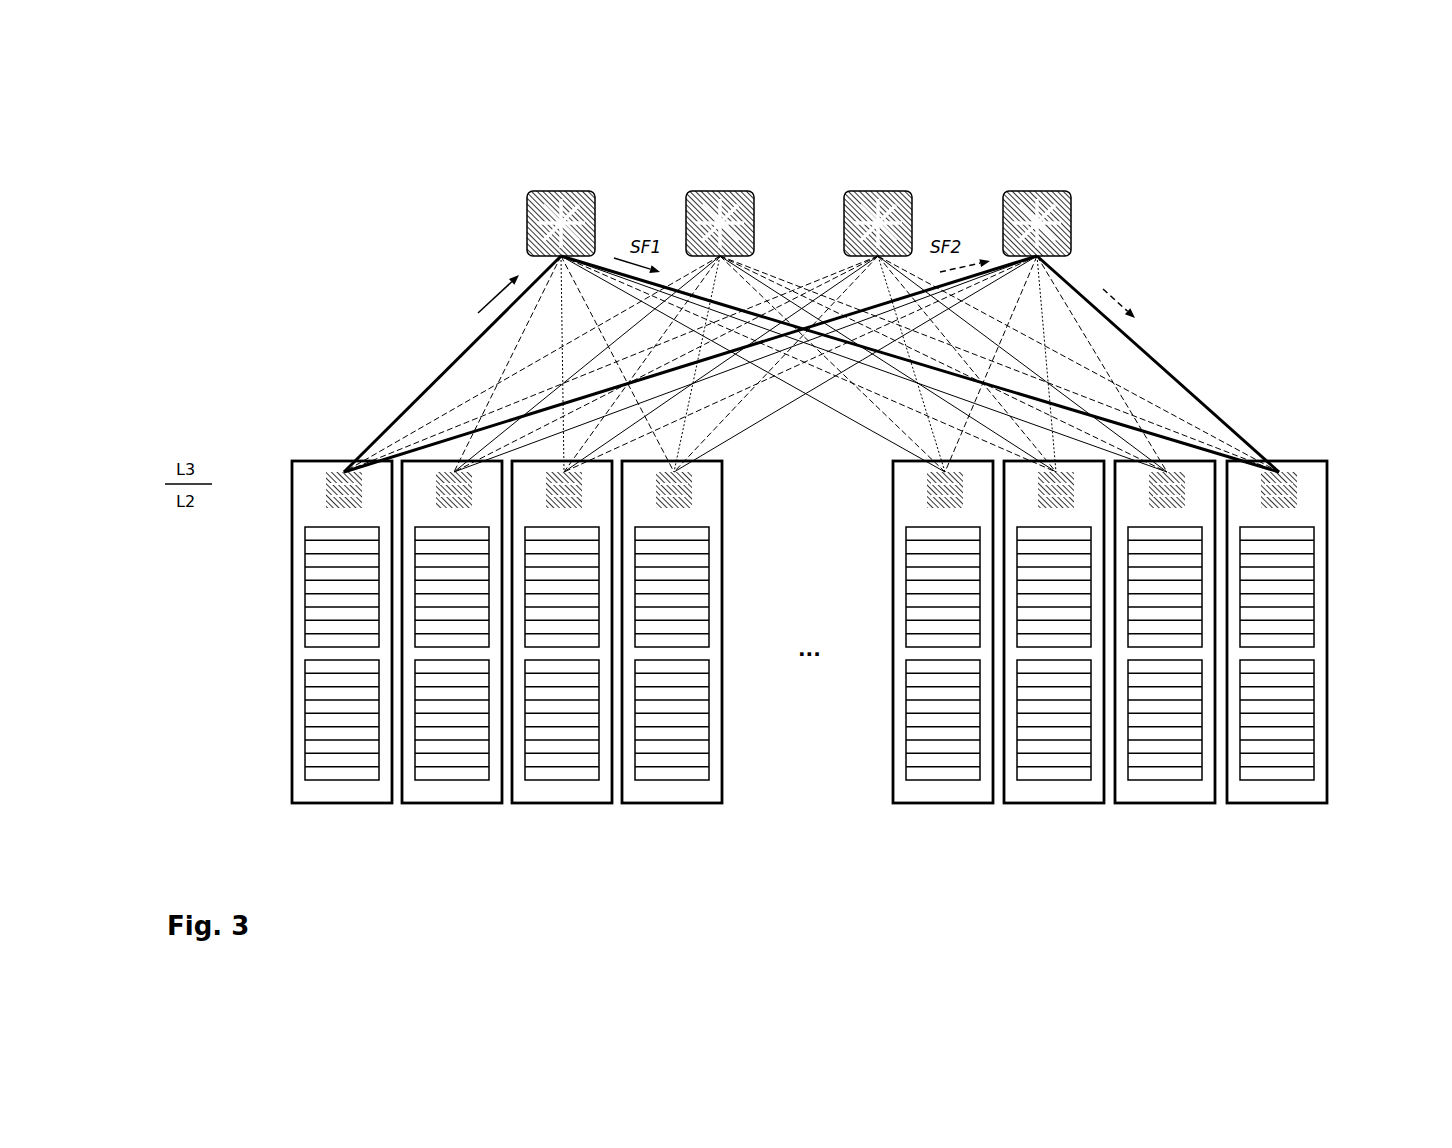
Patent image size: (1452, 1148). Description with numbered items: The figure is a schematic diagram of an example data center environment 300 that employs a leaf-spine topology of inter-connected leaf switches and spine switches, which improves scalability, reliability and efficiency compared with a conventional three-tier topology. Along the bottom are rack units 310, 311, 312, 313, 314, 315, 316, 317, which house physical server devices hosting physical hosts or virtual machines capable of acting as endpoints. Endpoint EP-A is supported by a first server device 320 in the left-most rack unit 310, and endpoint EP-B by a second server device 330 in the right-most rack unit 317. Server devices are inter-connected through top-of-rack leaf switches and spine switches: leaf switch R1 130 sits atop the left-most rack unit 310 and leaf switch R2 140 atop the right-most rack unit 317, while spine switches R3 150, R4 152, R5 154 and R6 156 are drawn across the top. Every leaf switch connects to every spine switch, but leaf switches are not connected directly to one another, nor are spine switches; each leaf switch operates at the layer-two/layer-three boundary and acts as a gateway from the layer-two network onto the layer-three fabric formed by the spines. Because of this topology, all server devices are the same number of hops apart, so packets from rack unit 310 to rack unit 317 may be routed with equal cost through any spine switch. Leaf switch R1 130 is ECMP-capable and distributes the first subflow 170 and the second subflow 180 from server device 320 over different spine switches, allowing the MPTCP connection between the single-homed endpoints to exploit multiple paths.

The data center environment 300 is at (219, 116).
The leaf switch R1 130 is at (326, 484).
The leaf switch R2 140 is at (1298, 490).
The spine switch R3 150 is at (560, 190).
The spine switch R4 152 is at (719, 190).
The spine switch R5 154 is at (877, 190).
The spine switch R6 156 is at (1036, 190).
The first subflow 170 is at (444, 292).
The second subflow 180 is at (1161, 294).
The rack unit 310 is at (300, 651).
The rack unit 311 is at (453, 806).
The rack unit 312 is at (563, 806).
The rack unit 313 is at (673, 806).
The rack unit 314 is at (944, 806).
The rack unit 315 is at (1055, 806).
The rack unit 316 is at (1166, 806).
The rack unit 317 is at (1315, 651).
The first server device 320 is at (326, 541).
The second server device 330 is at (1292, 540).